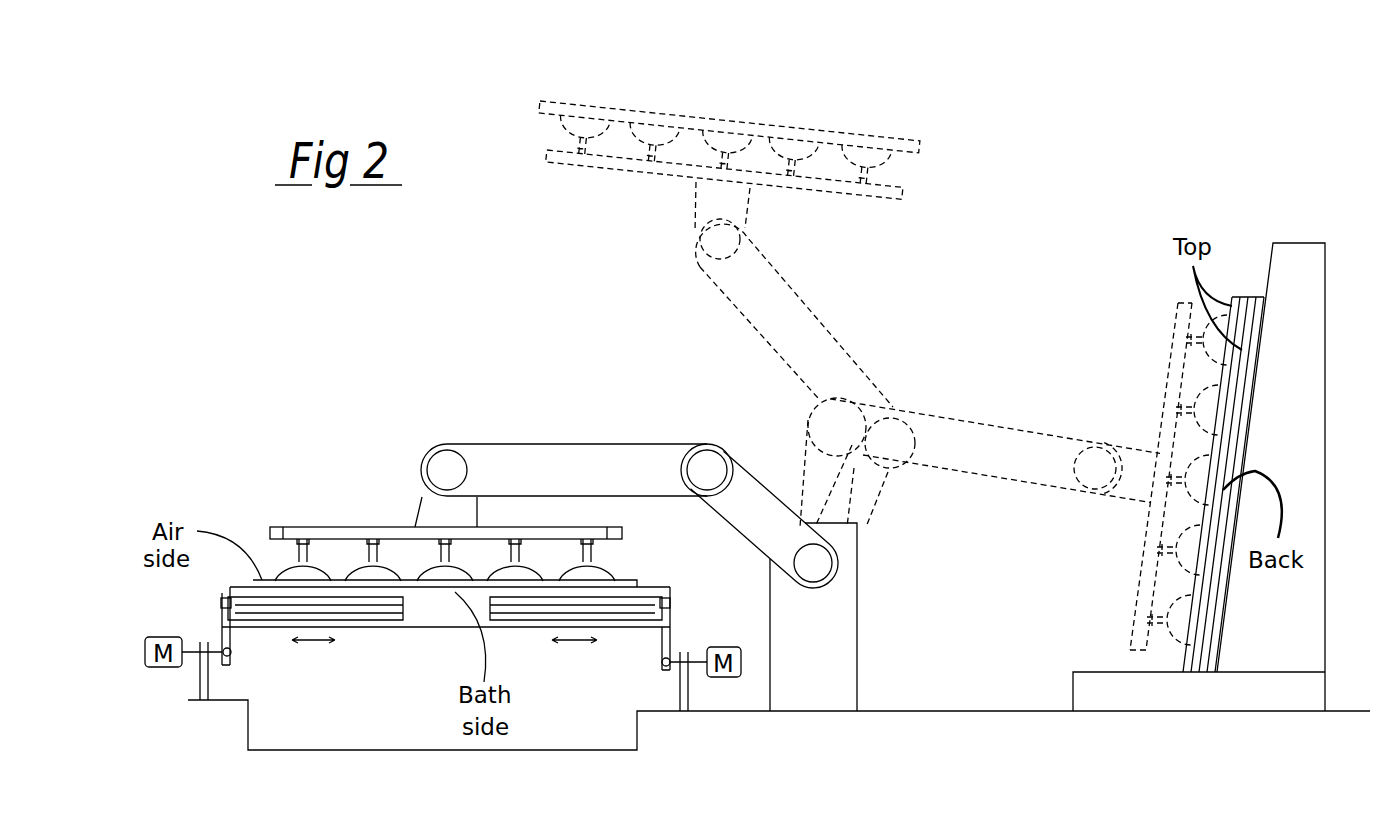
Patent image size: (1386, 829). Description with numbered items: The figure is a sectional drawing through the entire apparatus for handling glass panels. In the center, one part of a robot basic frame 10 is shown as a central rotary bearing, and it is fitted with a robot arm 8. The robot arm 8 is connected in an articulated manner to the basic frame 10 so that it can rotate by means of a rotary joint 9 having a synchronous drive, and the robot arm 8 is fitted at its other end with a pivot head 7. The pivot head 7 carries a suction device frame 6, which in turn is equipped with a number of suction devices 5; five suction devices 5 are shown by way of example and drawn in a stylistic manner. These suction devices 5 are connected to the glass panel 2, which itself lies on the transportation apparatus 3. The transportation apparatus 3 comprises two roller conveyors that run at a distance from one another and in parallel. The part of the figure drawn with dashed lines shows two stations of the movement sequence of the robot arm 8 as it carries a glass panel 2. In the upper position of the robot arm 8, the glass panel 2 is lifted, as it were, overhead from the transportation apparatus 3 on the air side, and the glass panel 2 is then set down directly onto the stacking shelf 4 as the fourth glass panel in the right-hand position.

The glass panel 2 is at (437, 589).
The transportation apparatus 3 is at (643, 603).
The stacking shelf 4 is at (1308, 265).
The suction devices 5 is at (298, 570).
The suction device frame 6 is at (355, 535).
The pivot head 7 is at (445, 468).
The robot arm 8 is at (568, 462).
The rotary joint 9 is at (707, 468).
The robot basic frame 10 is at (810, 627).